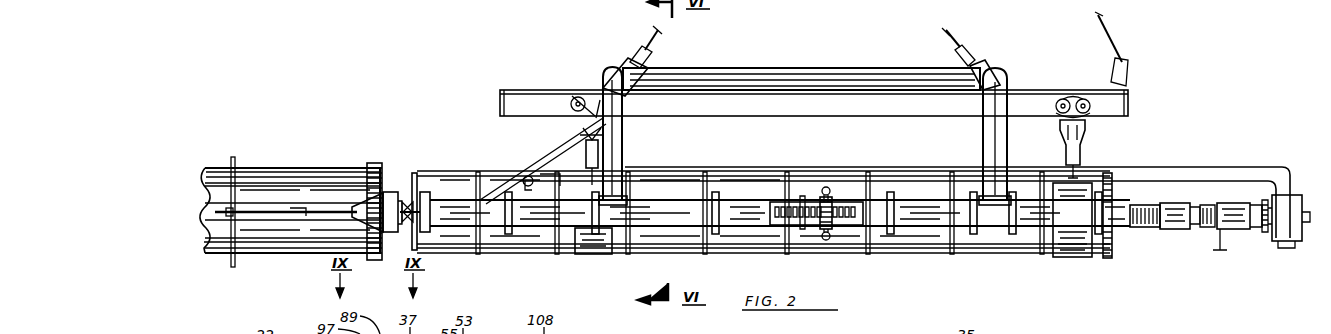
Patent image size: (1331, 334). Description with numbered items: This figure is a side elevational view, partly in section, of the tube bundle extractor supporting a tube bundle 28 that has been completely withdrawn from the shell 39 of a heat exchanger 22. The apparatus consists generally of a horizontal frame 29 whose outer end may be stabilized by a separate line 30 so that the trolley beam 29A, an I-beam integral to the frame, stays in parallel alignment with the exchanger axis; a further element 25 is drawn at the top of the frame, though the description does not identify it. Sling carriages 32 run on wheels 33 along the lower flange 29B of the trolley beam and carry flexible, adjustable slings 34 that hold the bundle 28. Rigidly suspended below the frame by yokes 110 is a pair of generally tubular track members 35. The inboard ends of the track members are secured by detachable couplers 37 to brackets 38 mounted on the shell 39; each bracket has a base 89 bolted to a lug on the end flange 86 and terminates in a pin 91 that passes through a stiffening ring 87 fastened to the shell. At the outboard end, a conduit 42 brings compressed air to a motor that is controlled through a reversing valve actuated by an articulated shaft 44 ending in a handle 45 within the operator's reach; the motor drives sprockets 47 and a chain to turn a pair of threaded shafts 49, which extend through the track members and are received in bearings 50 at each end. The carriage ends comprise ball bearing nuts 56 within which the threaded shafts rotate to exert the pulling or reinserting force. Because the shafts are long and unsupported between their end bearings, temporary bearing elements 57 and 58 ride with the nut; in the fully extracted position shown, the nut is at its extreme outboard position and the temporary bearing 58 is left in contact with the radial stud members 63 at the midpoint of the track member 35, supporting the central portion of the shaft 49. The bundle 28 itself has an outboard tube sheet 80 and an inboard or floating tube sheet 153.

The heat exchanger 22 is at (205, 232).
The hydraulic cylinder 25 is at (652, 38).
The tube bundle 28 is at (955, 258).
The horizontal frame 29 is at (778, 70).
The trolley beam 29A is at (1018, 90).
The lower flange 29B is at (796, 112).
The line 30 is at (1112, 45).
The sling carriage 32 is at (592, 120).
The wheels 33 is at (575, 96).
The slings 34 is at (592, 252).
The track members 35 is at (700, 202).
The detachable coupler 37 is at (408, 200).
The bracket 38 is at (308, 215).
The shell 39 is at (310, 166).
The conduit 42 is at (530, 178).
The articulated shaft 44 is at (1232, 168).
The handle 45 is at (600, 160).
The sprockets 47 is at (1262, 230).
The threaded shaft 49 is at (835, 218).
The bearings 50 is at (1250, 228).
The ball bearing nut 56 is at (1178, 228).
The temporary bearing element 57 is at (1200, 207).
The temporary bearing element 58 is at (832, 207).
The radial stud members 63 is at (822, 203).
The outboard tube sheet 80 is at (1108, 262).
The end flange 86 is at (370, 162).
The stiffening ring 87 is at (232, 158).
The base 89 is at (385, 195).
The pin 91 is at (226, 210).
The yokes 110 is at (623, 140).
The floating tube sheet 153 is at (418, 185).